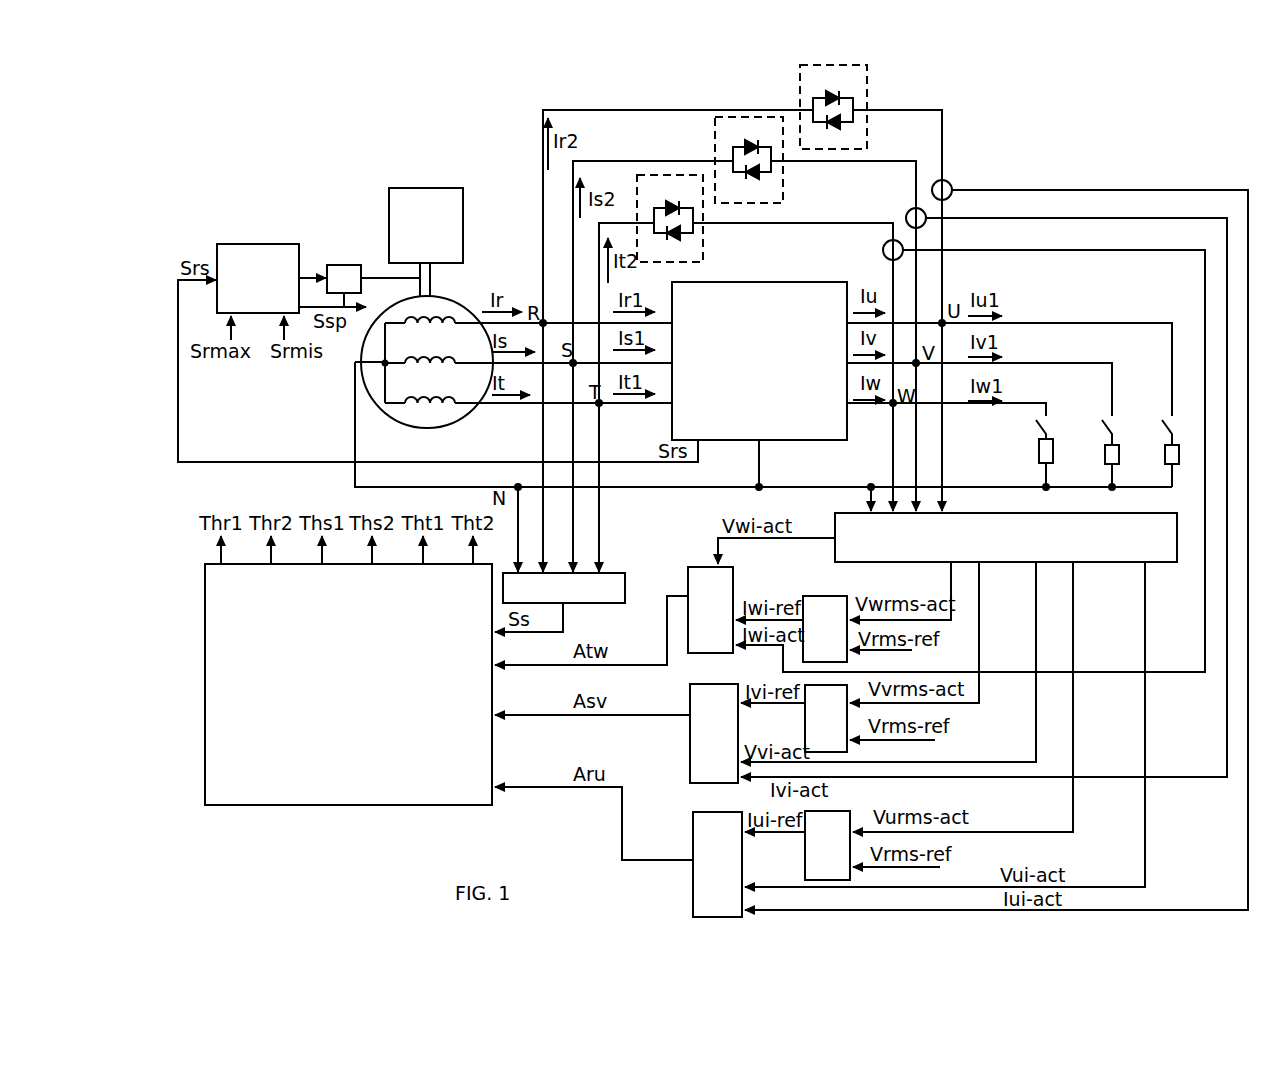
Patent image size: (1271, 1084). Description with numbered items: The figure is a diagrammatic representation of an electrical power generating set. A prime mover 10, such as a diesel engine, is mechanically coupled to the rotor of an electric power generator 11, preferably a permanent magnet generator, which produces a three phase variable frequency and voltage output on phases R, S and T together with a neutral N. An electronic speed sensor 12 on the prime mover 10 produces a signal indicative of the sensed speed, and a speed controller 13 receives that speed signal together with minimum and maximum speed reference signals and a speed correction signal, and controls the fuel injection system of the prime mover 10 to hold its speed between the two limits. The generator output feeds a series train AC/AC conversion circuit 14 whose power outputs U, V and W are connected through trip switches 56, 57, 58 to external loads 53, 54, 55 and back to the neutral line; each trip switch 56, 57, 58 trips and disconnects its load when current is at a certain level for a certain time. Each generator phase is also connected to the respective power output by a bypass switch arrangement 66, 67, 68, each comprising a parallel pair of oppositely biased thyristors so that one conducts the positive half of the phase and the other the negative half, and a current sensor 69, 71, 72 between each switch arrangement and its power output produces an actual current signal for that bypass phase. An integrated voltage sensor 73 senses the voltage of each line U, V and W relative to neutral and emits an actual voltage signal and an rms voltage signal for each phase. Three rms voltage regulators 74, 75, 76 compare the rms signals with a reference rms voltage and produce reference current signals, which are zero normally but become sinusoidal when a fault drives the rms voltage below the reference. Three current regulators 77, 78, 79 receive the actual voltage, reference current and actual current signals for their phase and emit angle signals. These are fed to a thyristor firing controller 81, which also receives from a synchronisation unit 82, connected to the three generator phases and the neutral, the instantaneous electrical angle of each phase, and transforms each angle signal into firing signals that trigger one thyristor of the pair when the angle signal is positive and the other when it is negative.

The prime mover 10 is at (463, 193).
The electric power generator 11 is at (467, 303).
The electronic speed sensor 12 is at (352, 265).
The speed controller 13 is at (277, 244).
The series train AC/AC conversion circuit 14 is at (778, 282).
The external load 53 is at (1164, 458).
The external load 54 is at (1104, 458).
The external load 55 is at (1038, 458).
The trip switch 56 is at (1163, 423).
The trip switch 57 is at (1103, 423).
The trip switch 58 is at (1036, 423).
The switch arrangement 66 is at (867, 76).
The switch arrangement 67 is at (715, 136).
The switch arrangement 68 is at (703, 237).
The current sensor 69 is at (950, 183).
The current sensor 71 is at (907, 212).
The current sensor 72 is at (883, 251).
The integrated voltage sensor 73 is at (1006, 537).
The rms voltage regulator 74 is at (805, 850).
The rms voltage regulator 75 is at (805, 726).
The rms voltage regulator 76 is at (803, 596).
The current regulator 77 is at (693, 848).
The current regulator 78 is at (690, 740).
The current regulator 79 is at (688, 567).
The thyristor firing controller 81 is at (360, 805).
The synchronisation unit 82 is at (628, 601).